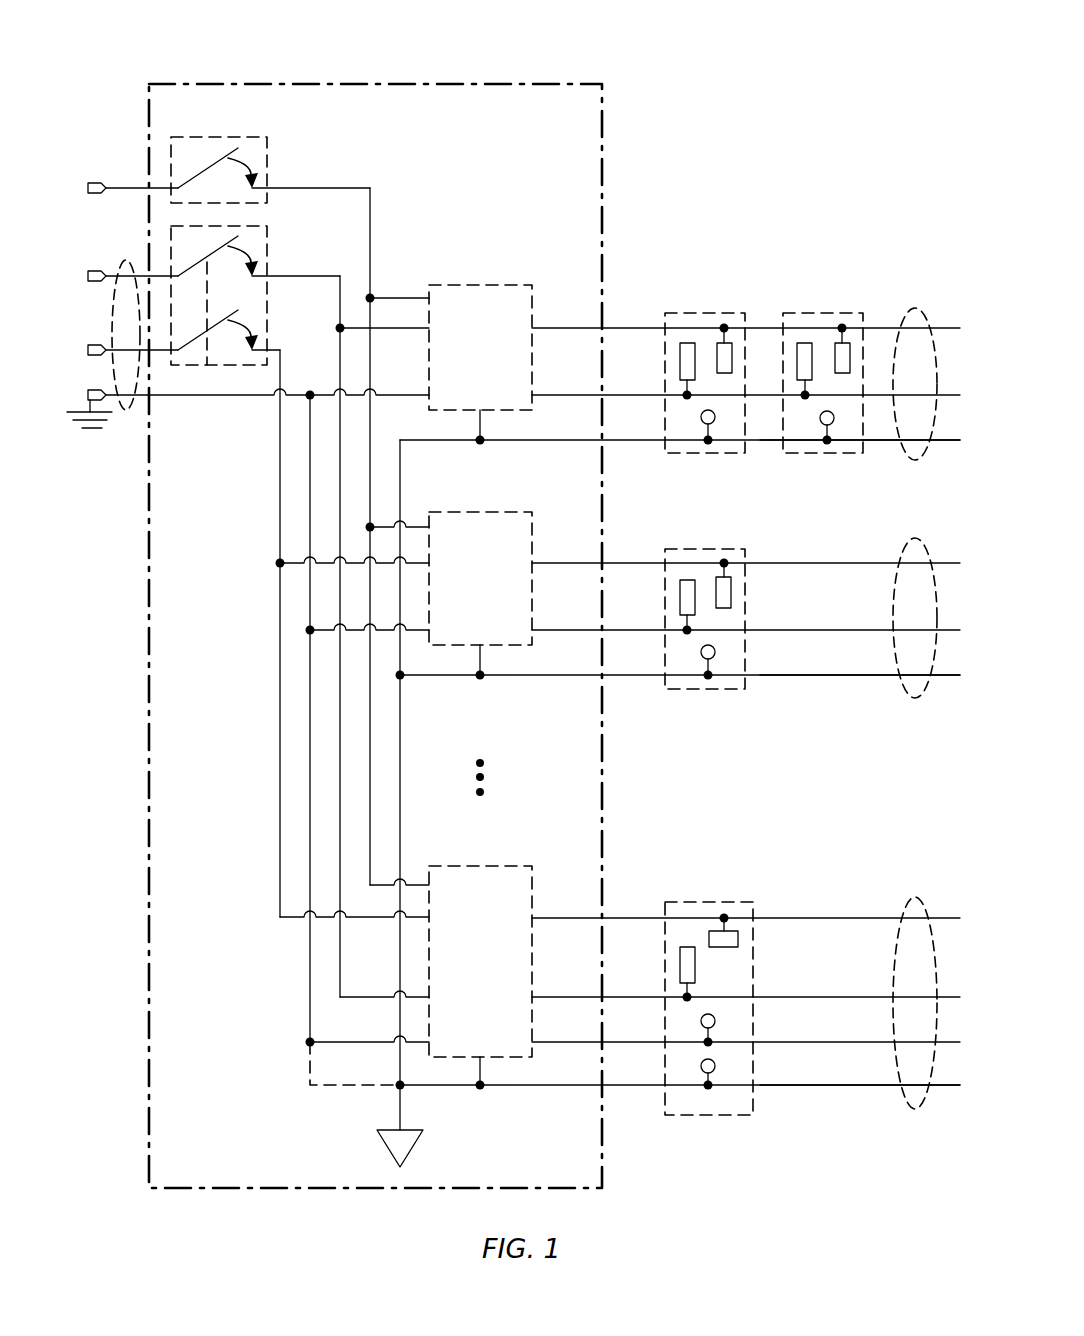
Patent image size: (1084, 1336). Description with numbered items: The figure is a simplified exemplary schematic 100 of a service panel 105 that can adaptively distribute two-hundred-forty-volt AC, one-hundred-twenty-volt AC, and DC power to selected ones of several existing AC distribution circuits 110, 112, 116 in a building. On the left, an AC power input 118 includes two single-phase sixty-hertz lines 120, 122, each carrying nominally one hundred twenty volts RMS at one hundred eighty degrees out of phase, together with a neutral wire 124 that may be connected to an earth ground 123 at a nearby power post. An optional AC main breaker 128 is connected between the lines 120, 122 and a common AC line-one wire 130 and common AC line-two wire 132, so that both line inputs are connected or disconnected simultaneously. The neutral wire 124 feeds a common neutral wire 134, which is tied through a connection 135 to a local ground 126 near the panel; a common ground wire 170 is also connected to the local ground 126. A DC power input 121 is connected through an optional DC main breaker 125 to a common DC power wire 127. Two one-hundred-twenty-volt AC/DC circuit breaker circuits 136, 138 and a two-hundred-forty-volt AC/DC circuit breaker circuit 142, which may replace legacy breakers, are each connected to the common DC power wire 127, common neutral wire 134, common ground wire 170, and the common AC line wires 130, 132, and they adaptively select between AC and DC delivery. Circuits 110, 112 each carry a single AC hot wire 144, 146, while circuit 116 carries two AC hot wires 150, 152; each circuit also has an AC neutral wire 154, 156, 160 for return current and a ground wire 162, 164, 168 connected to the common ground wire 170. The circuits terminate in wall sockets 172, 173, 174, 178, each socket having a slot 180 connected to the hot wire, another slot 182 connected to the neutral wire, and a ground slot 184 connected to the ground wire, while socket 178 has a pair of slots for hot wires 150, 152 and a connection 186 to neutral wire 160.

The simplified exemplary schematic 100 is at (870, 62).
The service panel 105 is at (148, 638).
The existing AC distribution circuit 110 is at (915, 308).
The existing AC distribution circuit 112 is at (915, 538).
The existing AC distribution circuit 116 is at (915, 897).
The AC power input 118 is at (127, 262).
The single-phase 60 Hz line 120 is at (98, 270).
The DC power input 121 is at (98, 182).
The single-phase 60 Hz line 122 is at (98, 343).
The earth ground 123 is at (95, 430).
The neutral wire 124 is at (95, 390).
The DC main breaker 125 is at (252, 137).
The local ground 126 is at (415, 1145).
The common DC power wire 127 is at (370, 203).
The AC main breaker 128 is at (267, 262).
The common AC line 1 wire 130 is at (340, 353).
The common AC line 2 wire 132 is at (280, 455).
The common neutral wire 134 is at (310, 953).
The connection 135 is at (310, 1065).
The 120V AC/DC circuit breaker circuit 136 is at (518, 285).
The 120V AC/DC circuit breaker circuit 138 is at (518, 512).
The 240V AC/DC circuit breaker circuit 142 is at (518, 866).
The AC hot wire 144 is at (637, 327).
The AC hot wire 146 is at (637, 563).
The AC hot wire 150 is at (637, 918).
The AC hot wire 152 is at (637, 997).
The AC neutral wire 154 is at (637, 395).
The AC neutral wire 156 is at (637, 630).
The AC neutral wire 160 is at (857, 1042).
The ground wire 162 is at (885, 442).
The ground wire 164 is at (865, 676).
The ground wire 168 is at (878, 1087).
The common ground wire 170 is at (400, 453).
The socket 172 is at (729, 377).
The socket 173 is at (795, 313).
The socket 174 is at (722, 689).
The socket 178 is at (721, 1032).
The slot 180 is at (732, 351).
The slot 182 is at (698, 348).
The ground slot 184 is at (702, 421).
The connection 186 is at (700, 1021).